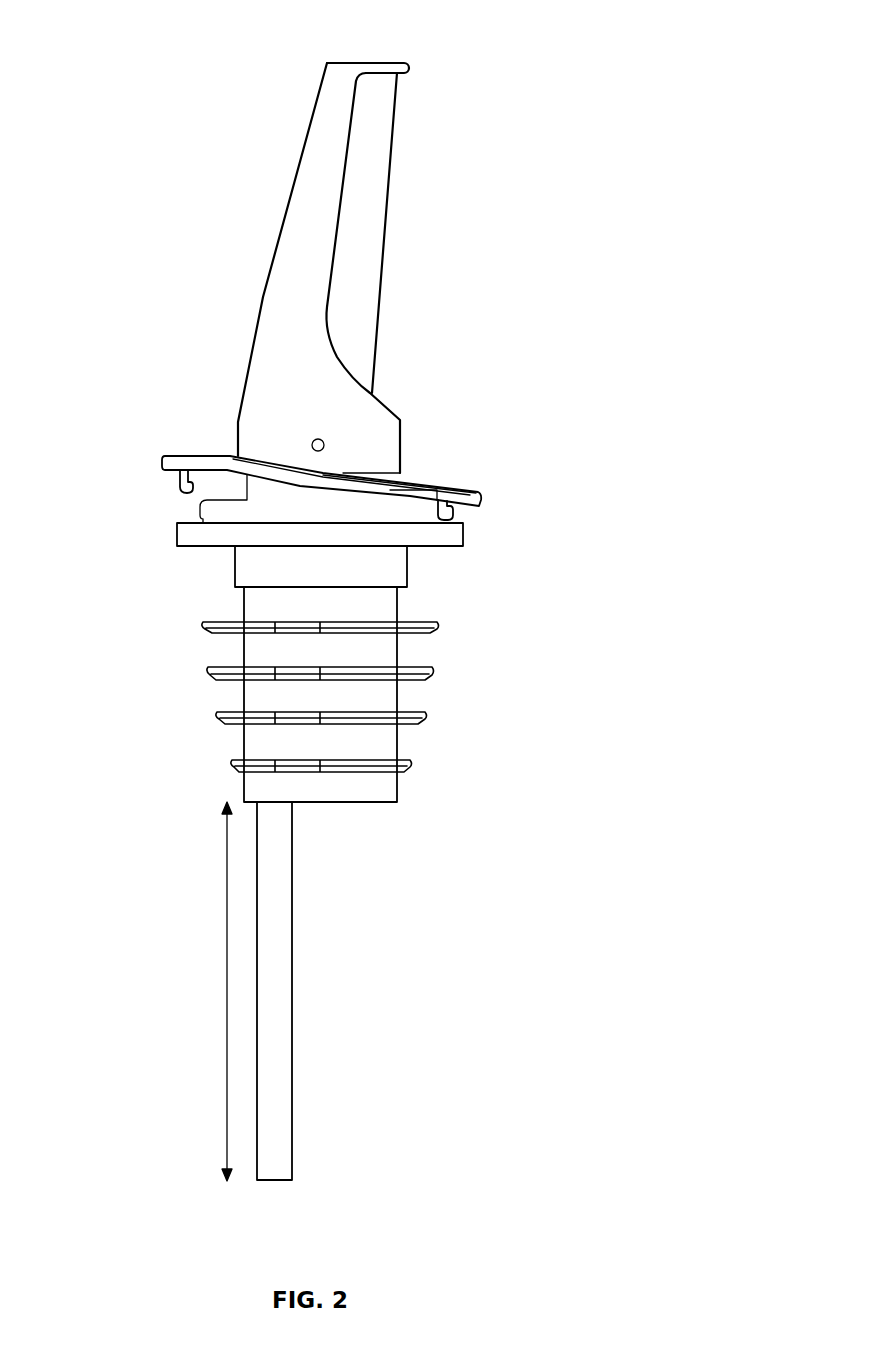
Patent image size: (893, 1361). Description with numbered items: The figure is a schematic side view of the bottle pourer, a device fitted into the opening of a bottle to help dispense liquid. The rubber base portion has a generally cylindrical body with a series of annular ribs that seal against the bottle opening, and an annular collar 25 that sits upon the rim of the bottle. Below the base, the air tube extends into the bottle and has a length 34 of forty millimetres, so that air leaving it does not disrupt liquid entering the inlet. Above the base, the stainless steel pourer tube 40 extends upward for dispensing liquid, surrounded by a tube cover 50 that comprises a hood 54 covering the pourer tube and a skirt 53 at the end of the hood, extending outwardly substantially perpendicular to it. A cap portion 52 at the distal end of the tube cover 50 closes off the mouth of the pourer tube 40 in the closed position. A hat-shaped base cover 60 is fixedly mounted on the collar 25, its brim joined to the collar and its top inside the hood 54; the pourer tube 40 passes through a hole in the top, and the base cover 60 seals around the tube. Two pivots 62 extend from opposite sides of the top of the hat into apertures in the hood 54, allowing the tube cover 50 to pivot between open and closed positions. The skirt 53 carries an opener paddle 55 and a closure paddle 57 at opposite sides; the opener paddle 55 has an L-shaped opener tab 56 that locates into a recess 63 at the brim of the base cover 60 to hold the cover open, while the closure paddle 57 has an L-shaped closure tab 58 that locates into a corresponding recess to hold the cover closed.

The annular collar 25 is at (213, 535).
The length 34 is at (227, 971).
The pourer tube 40 is at (384, 234).
The tube cover 50 is at (292, 212).
The cap portion 52 is at (388, 60).
The skirt 53 is at (277, 478).
The hood 54 is at (280, 303).
The opener paddle 55 is at (183, 453).
The L-shaped opener tab 56 is at (177, 478).
The closure paddle 57 is at (455, 485).
The L-shaped closure tab 58 is at (457, 515).
The base cover 60 is at (343, 508).
The pivots 62 is at (325, 444).
The recess 63 is at (197, 518).